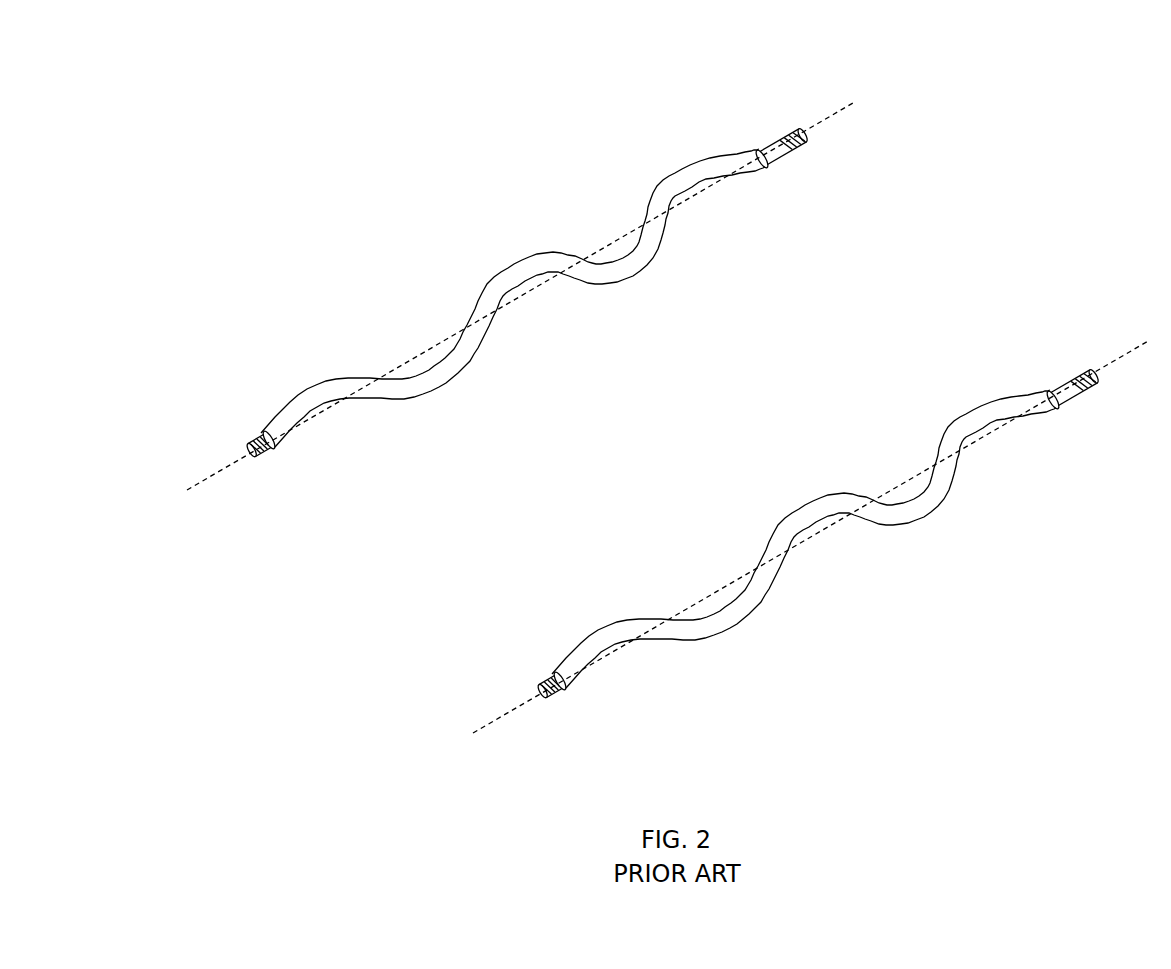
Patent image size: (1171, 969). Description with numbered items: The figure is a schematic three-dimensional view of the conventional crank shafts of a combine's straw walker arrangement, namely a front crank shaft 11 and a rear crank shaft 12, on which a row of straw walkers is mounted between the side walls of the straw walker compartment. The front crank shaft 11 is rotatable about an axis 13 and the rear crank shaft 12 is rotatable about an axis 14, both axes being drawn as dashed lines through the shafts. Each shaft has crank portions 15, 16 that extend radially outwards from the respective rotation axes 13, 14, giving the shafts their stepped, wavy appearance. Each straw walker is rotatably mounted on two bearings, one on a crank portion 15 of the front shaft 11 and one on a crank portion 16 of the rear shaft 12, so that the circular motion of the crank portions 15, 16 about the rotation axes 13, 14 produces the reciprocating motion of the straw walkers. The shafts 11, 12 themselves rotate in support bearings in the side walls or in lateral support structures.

The front crank shaft 11 is at (501, 288).
The rear crank shaft 12 is at (778, 532).
The rotation axis of front crank shaft 13 is at (840, 100).
The rotation axis of rear crank shaft 14 is at (1138, 342).
The crank portion of front crank shaft 15 is at (682, 175).
The crank portion of rear crank shaft 16 is at (600, 632).